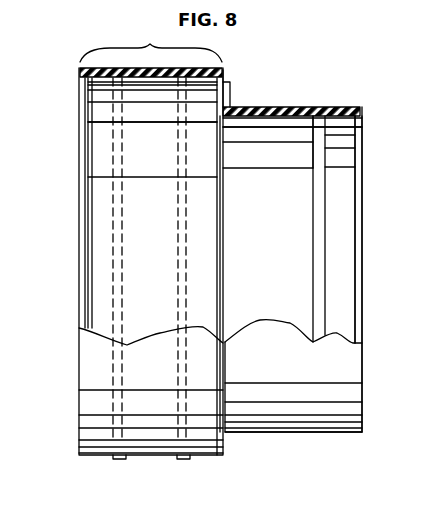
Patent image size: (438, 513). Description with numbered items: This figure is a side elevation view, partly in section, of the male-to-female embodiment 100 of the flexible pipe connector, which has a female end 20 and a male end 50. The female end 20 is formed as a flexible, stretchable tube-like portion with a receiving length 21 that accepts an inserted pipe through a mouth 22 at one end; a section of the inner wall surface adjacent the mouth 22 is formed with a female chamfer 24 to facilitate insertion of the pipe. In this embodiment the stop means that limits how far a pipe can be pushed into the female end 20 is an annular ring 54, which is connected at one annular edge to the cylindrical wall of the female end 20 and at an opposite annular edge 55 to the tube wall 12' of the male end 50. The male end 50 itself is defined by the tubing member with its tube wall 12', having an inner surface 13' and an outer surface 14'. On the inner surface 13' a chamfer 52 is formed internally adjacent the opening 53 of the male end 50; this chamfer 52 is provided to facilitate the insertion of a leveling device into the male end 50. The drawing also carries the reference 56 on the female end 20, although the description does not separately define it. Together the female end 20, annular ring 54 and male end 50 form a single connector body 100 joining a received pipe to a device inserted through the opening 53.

The female end 20 is at (125, 42).
The receiving length 21 is at (151, 42).
The mouth 22 is at (71, 208).
The female chamfer 24 is at (80, 72).
The internal ledge 56 is at (217, 107).
The male end 50 is at (318, 57).
The chamfer 52 is at (360, 116).
The opening 53 is at (362, 222).
The annular ring 54 is at (230, 89).
The opposite annular edge 55 is at (225, 73).
The outer surface 14' is at (291, 96).
The tube wall 12' is at (293, 91).
The inner surface 13' is at (340, 117).
The male-to-female embodiment 100 is at (257, 455).